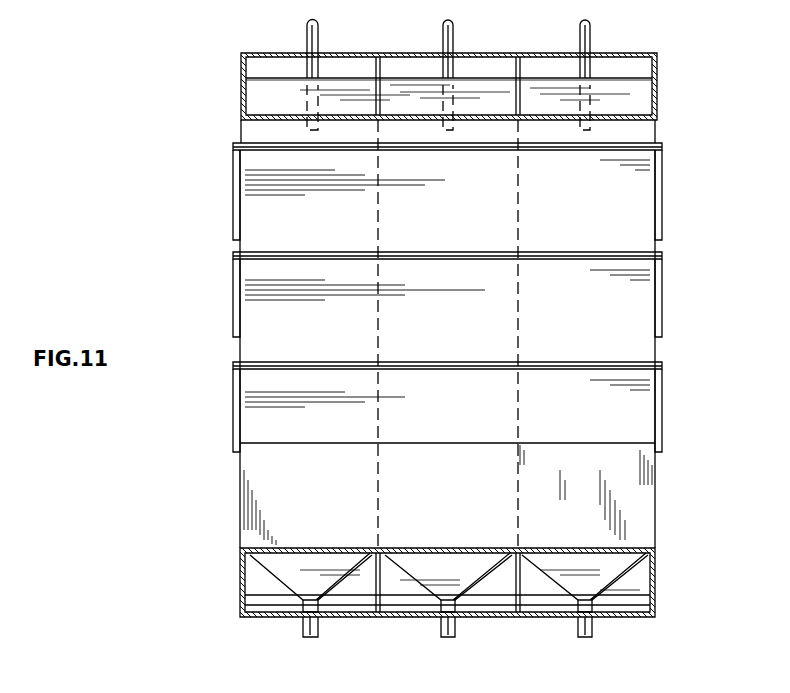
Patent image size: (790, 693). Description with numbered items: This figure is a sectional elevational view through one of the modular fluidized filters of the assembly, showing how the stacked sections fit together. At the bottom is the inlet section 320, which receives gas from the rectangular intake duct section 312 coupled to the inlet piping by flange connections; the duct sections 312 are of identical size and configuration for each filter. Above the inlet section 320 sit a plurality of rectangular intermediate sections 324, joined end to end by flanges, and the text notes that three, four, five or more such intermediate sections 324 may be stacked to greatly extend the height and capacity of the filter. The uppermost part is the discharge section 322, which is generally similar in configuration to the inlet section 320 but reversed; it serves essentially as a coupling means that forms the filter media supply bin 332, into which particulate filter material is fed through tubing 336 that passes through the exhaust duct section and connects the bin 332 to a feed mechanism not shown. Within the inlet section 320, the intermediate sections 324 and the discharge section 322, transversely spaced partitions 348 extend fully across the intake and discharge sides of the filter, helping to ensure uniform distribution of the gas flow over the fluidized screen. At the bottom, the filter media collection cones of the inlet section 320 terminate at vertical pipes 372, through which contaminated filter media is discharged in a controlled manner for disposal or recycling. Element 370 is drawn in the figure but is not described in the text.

The intake duct section 312 is at (612, 620).
The inlet section 320 is at (240, 487).
The discharge section 322 is at (655, 138).
The intermediate section 324 is at (662, 232).
The filter media supply bin 332 is at (640, 131).
The tubing 336 is at (591, 42).
The partitions 348 is at (380, 296).
The hopper 370 is at (552, 562).
The vertical pipe 372 is at (441, 625).